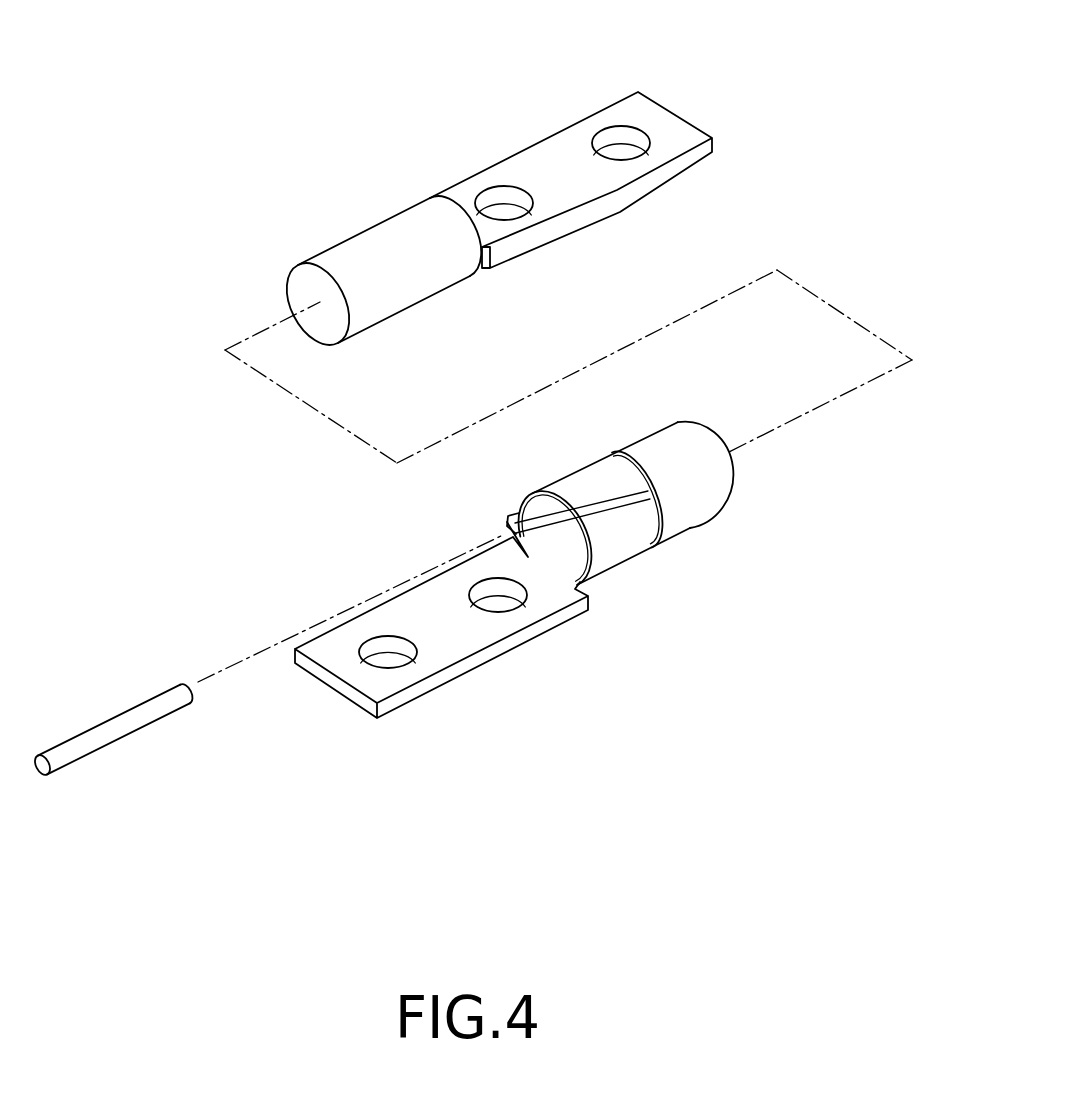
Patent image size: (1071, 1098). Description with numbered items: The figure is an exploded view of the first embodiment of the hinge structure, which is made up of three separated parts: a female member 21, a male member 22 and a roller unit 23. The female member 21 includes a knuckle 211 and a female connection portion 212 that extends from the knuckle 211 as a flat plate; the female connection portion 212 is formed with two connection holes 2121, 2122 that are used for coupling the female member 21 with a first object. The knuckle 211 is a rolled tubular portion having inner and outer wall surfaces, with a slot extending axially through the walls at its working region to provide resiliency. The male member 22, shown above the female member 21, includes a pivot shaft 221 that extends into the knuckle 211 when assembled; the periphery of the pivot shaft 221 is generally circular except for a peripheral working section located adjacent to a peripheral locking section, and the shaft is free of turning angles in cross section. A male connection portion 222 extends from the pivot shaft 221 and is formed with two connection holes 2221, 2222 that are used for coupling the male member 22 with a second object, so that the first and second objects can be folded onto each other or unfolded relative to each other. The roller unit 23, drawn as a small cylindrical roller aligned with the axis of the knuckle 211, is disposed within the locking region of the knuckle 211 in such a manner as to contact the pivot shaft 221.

The female member 21 is at (790, 478).
The knuckle 211 is at (642, 532).
The female connection portion 212 is at (547, 605).
The connection hole 2121 is at (395, 663).
The connection hole 2122 is at (502, 607).
The male member 22 is at (758, 85).
The pivot shaft 221 is at (413, 288).
The male connection portion 222 is at (607, 183).
The connection hole 2221 is at (500, 196).
The connection hole 2222 is at (613, 130).
The roller unit 23 is at (110, 728).